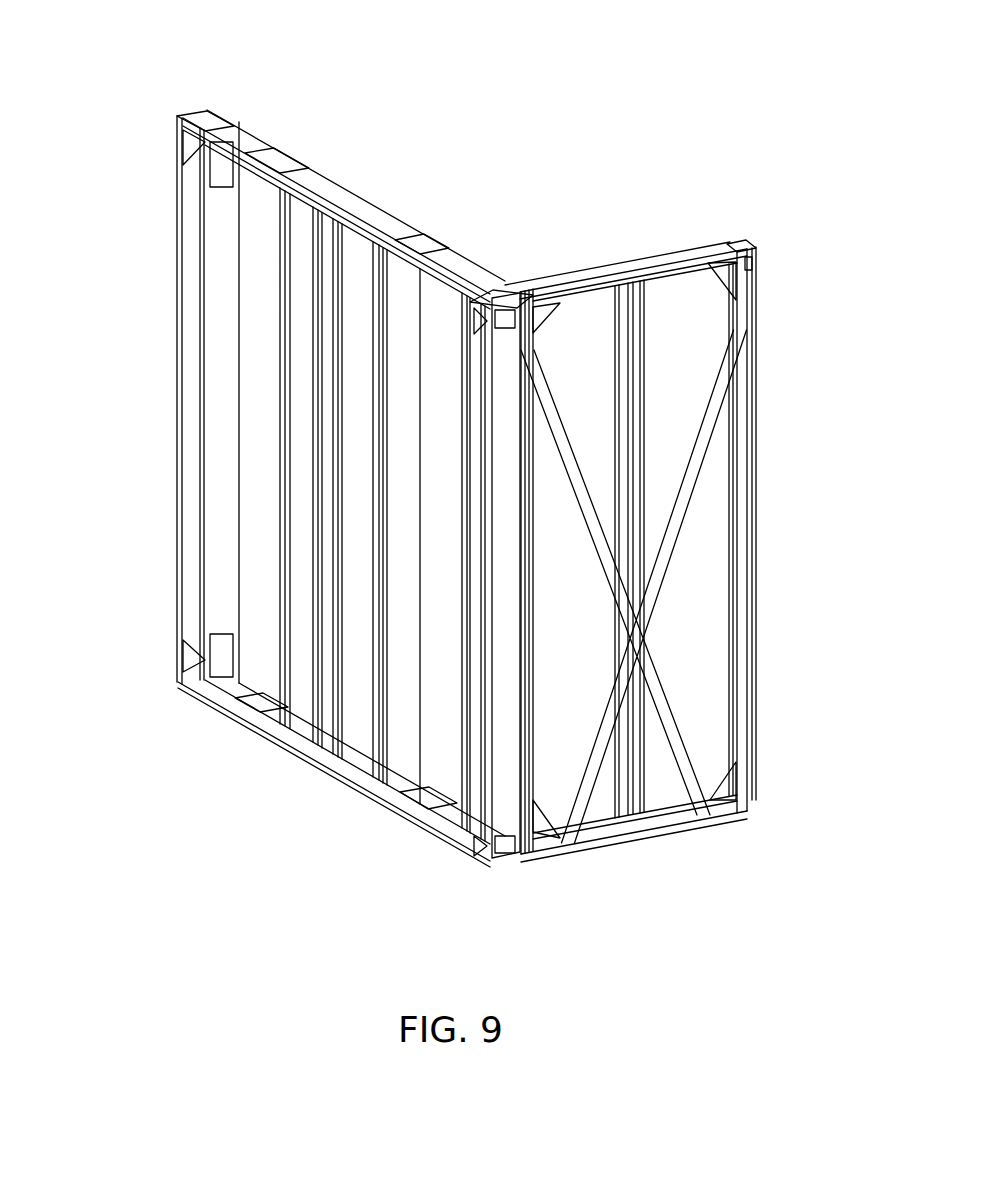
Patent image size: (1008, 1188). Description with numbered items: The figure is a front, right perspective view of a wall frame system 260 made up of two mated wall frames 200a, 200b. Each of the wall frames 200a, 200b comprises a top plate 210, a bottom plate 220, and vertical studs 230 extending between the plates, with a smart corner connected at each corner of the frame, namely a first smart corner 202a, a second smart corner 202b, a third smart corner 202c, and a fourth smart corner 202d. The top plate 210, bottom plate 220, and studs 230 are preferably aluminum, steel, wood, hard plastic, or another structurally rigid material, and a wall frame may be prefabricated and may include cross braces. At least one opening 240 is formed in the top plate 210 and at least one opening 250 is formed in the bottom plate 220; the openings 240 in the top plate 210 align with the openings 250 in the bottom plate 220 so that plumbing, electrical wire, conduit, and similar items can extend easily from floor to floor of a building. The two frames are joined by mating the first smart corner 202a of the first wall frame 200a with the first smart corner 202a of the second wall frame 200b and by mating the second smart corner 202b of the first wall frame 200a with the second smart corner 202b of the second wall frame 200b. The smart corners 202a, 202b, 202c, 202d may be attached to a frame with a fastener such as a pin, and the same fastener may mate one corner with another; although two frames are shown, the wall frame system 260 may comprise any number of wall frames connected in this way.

The wall frame system 260 is at (490, 80).
The first wall frame 200a is at (328, 154).
The second wall frame 200b is at (636, 243).
The top plate 210 is at (362, 210).
The bottom plate 220 is at (300, 760).
The vertical studs 230 is at (225, 363).
The opening in the top plate 240 is at (280, 160).
The opening in the bottom plate 250 is at (245, 712).
The first smart corner 202a is at (540, 290).
The second smart corner 202b is at (490, 865).
The third smart corner 202c is at (180, 140).
The fourth smart corner 202d is at (180, 665).